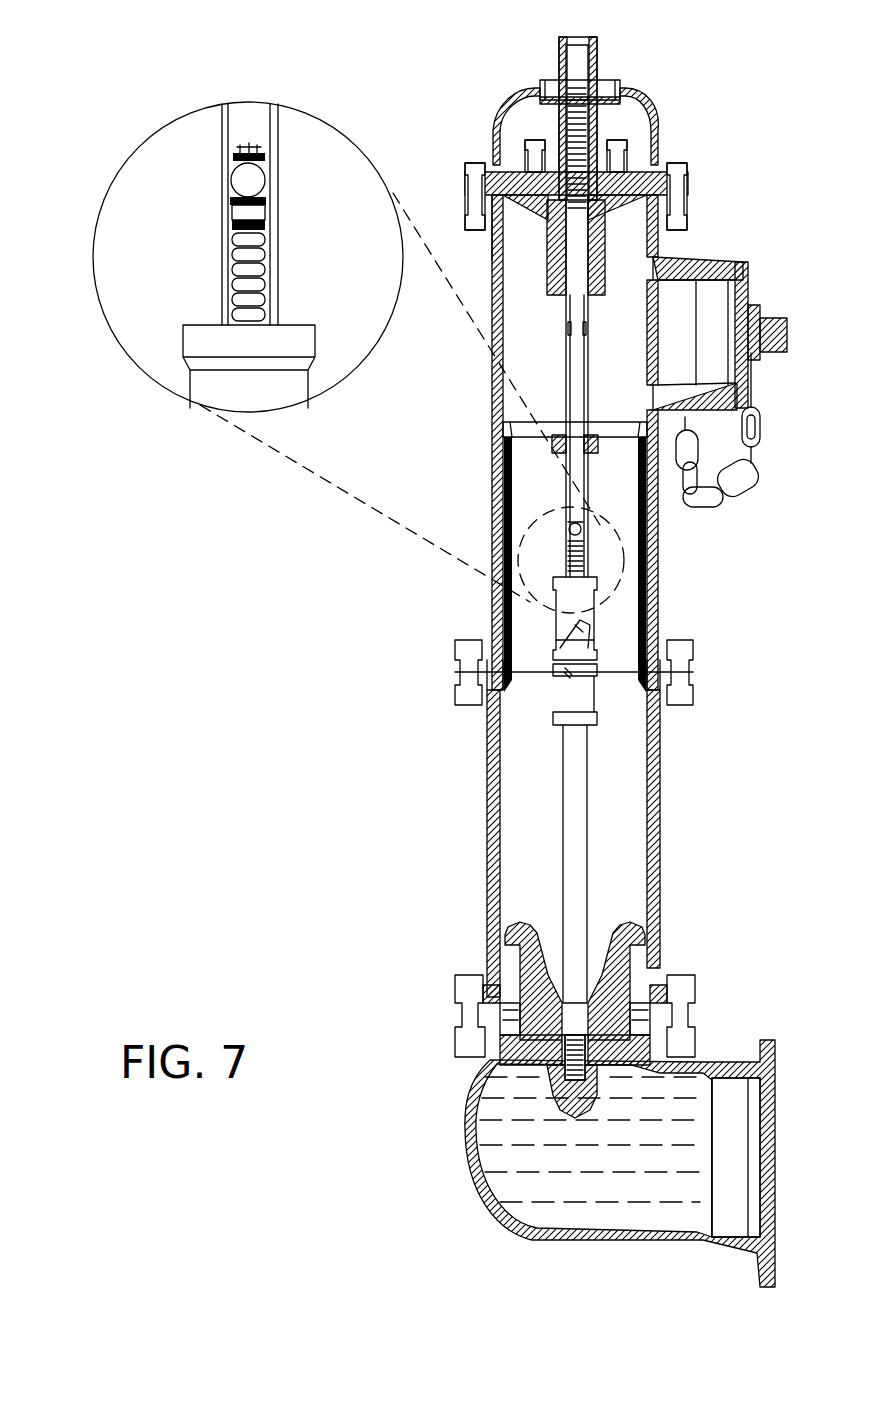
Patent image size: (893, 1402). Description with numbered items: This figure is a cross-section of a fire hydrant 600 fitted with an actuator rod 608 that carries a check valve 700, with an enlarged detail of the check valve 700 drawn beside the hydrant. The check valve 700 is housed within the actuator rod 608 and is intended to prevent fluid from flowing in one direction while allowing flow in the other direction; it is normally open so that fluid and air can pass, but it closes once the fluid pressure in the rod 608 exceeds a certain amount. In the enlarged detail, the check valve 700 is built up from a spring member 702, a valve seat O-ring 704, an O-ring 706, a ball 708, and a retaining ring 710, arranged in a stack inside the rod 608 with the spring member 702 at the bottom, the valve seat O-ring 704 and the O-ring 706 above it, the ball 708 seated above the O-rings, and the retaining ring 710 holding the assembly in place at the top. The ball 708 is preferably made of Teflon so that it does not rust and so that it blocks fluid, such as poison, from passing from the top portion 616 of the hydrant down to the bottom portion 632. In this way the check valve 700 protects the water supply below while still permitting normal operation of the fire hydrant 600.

The fire hydrant 600 is at (803, 80).
The actuator rod 608 is at (583, 288).
The top portion 616 is at (657, 167).
The bottom portion 632 is at (773, 518).
The check valve 700 is at (163, 48).
The spring member 702 is at (238, 302).
The valve seat O-ring 704 is at (236, 222).
The O-ring 706 is at (228, 197).
The ball 708 is at (265, 175).
The retaining ring 710 is at (244, 143).